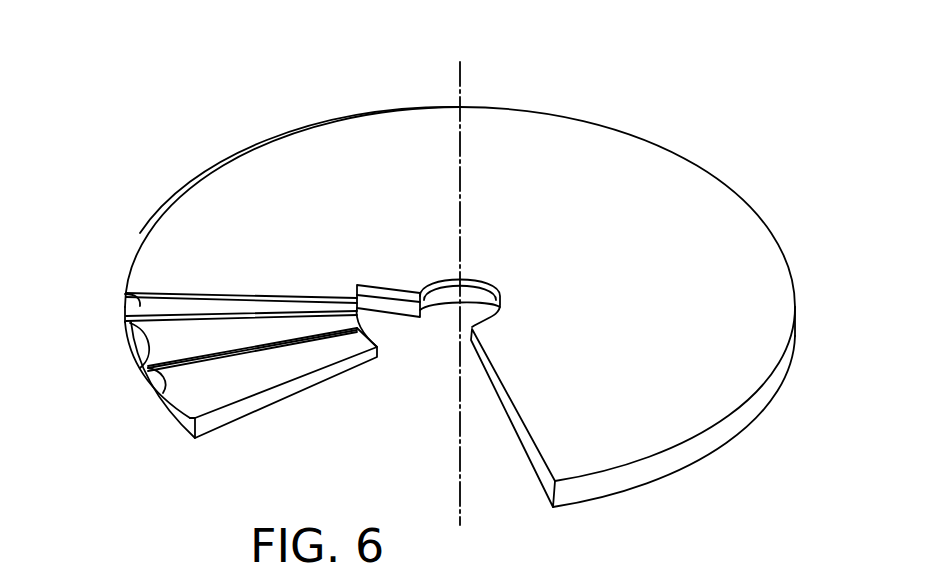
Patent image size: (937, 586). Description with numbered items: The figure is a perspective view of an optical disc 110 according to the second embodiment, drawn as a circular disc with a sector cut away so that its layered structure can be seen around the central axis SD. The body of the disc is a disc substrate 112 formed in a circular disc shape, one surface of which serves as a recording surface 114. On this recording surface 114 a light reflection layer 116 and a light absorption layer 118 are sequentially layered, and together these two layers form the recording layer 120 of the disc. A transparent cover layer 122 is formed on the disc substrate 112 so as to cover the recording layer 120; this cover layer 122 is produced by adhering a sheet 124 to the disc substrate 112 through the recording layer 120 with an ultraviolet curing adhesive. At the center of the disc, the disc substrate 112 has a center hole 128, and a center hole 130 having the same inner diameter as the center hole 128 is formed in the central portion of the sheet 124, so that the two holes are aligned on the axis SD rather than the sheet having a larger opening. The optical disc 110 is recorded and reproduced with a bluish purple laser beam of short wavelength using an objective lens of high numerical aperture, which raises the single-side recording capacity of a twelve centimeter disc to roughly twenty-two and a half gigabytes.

The optical disc 110 is at (723, 110).
The disc substrate 112 is at (180, 432).
The recording surface 114 is at (158, 408).
The light reflection layer 116 is at (148, 372).
The light absorption layer 118 is at (134, 346).
The recording layer 120 is at (66, 343).
The cover layer 122 is at (125, 308).
The sheet 124 is at (157, 240).
The center hole 128 is at (483, 294).
The center hole 130 is at (470, 281).
The symmetry axis SD is at (463, 83).